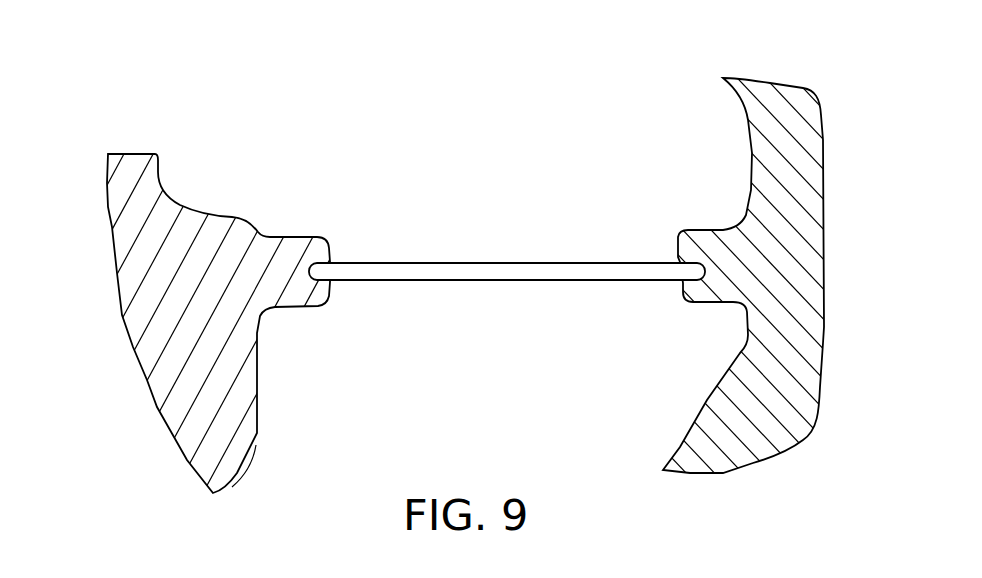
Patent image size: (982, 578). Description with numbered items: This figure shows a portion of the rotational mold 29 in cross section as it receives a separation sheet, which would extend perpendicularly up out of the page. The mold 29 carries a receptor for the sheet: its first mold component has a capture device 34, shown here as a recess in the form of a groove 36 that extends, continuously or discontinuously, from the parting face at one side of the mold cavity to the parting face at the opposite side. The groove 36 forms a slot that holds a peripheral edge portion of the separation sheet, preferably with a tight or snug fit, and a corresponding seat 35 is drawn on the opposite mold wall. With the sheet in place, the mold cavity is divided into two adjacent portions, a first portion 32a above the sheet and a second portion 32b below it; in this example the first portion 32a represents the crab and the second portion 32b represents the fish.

The mold 29 is at (140, 137).
The first portion 32a is at (504, 218).
The second portion 32b is at (498, 407).
The capture device 34 is at (320, 273).
The second groove 35 is at (695, 273).
The groove 36 is at (460, 282).